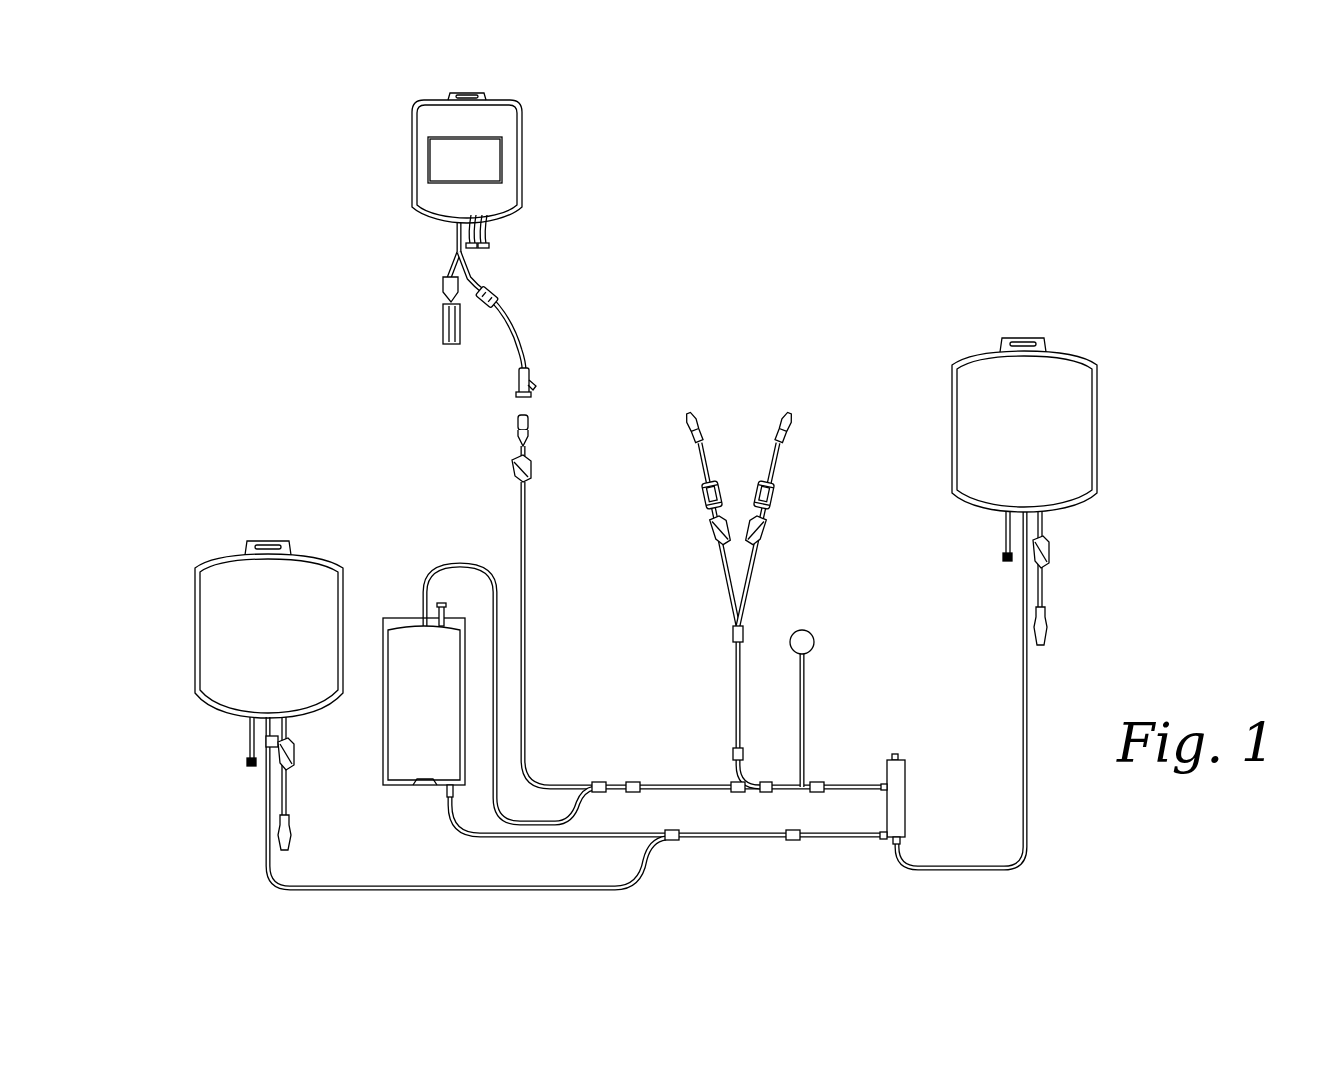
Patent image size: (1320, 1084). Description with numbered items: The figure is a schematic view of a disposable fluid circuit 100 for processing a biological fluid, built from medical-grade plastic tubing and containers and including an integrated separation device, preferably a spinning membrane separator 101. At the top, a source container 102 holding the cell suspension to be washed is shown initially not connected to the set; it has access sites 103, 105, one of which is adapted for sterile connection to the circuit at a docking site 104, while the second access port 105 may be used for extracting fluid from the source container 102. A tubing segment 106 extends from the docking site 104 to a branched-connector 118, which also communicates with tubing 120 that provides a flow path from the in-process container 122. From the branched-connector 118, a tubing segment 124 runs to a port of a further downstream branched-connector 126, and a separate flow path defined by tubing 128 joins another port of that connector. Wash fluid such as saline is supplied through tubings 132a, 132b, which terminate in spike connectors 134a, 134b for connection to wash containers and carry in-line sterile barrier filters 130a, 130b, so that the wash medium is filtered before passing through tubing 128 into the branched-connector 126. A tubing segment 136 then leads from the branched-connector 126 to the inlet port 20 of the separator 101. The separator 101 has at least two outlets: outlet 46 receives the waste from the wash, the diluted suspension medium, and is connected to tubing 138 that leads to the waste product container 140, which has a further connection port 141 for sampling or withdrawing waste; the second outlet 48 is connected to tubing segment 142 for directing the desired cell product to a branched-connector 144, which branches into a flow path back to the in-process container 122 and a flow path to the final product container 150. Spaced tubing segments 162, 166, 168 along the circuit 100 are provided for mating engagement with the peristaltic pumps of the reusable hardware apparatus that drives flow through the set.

The disposable fluid circuit 100 is at (823, 278).
The source container 102 is at (517, 126).
The access site 105 is at (491, 241).
The access site 103 is at (517, 396).
The docking site 104 is at (515, 423).
The tubing segment 106 is at (524, 656).
The tubing 120 is at (464, 560).
The in-process container 122 is at (392, 612).
The branched-connector 118 is at (598, 780).
The tubing segment 162 is at (662, 780).
The tubing segment 124 is at (744, 792).
The branched-connector 126 is at (776, 780).
The tubing 128 is at (743, 752).
The tubing segment 136 is at (830, 780).
The tubing segment 166 is at (728, 682).
The tubing 132a is at (723, 561).
The tubing 132b is at (753, 575).
The sterile barrier filter 130a is at (703, 495).
The sterile barrier filter 130b is at (788, 493).
The spike connector 134a is at (689, 427).
The spike connector 134b is at (797, 427).
The inlet port 20 is at (923, 800).
The spinning membrane separator 101 is at (907, 773).
The outlet 46 is at (909, 842).
The second outlet 48 is at (884, 842).
The tubing 138 is at (1029, 804).
The waste product container 140 is at (1100, 396).
The connection port 141 is at (1048, 637).
The tubing segment 142 is at (830, 842).
The tubing segment 168 is at (742, 842).
The branched-connector 144 is at (672, 842).
The final product container 150 is at (194, 590).